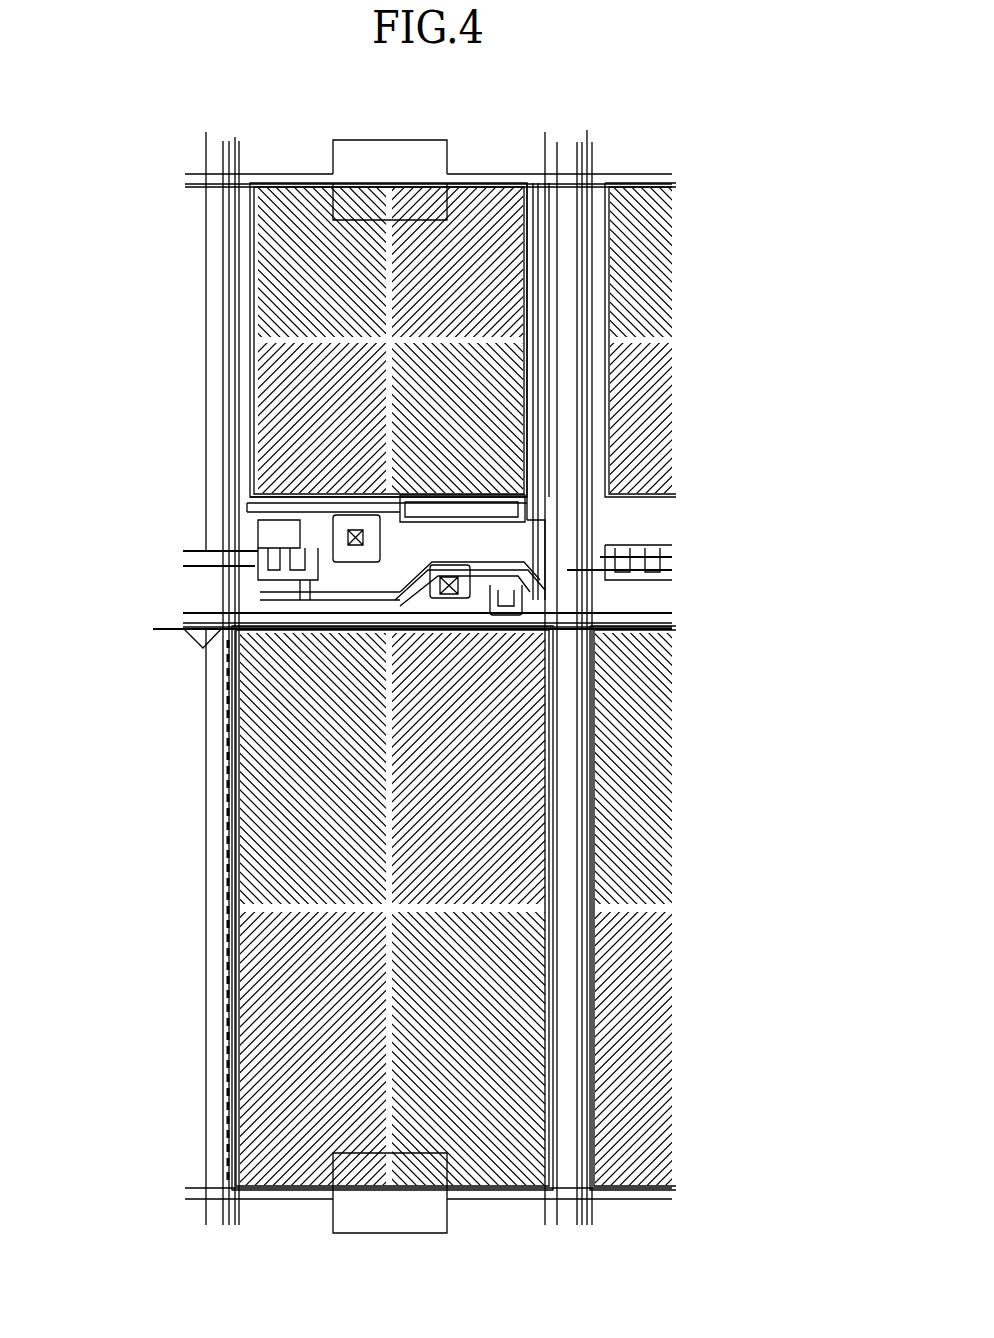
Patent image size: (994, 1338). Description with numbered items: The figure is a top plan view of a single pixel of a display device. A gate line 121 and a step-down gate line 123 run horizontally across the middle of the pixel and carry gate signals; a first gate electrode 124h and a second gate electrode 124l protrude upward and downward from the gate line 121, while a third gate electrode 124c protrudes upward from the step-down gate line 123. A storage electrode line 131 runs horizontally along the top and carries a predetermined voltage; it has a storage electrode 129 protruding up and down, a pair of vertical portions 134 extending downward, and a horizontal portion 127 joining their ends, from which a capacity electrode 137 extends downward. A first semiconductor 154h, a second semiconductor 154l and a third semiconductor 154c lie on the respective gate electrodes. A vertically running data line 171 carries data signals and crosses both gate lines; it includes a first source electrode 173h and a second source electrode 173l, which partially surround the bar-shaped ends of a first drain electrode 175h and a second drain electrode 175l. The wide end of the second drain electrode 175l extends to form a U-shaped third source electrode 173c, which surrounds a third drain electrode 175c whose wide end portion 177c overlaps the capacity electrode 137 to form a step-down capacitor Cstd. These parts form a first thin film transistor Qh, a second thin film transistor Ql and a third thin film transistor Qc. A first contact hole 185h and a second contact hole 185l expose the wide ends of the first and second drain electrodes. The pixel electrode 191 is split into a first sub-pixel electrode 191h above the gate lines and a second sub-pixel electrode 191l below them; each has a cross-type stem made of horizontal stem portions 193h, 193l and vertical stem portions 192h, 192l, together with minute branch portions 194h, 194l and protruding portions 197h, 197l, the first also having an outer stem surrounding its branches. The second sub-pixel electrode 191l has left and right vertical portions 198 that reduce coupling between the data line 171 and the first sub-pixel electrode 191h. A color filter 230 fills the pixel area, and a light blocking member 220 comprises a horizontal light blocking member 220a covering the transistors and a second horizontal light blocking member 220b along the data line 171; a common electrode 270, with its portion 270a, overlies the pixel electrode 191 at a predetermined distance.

The gate line 121 is at (600, 555).
The step-down gate line 123 is at (610, 645).
The first gate electrode 124h is at (300, 618).
The second gate electrode 124l is at (320, 500).
The third gate electrode 124c is at (610, 620).
The horizontal portion 127 is at (250, 500).
The storage electrode 129 is at (430, 140).
The storage electrode line 131 is at (492, 186).
The vertical portions 134 is at (545, 300).
The capacity electrode 137 is at (560, 545).
The first semiconductor 154h is at (280, 562).
The second semiconductor 154l is at (362, 610).
The third semiconductor 154c is at (520, 640).
The data line 171 is at (240, 209).
The first source electrode 173h is at (300, 590).
The second source electrode 173l is at (305, 538).
The third source electrode 173c is at (600, 590).
The first drain electrode 175h is at (300, 528).
The second drain electrode 175l is at (355, 600).
The third drain electrode 175c is at (560, 650).
The wide end portion 177c is at (540, 468).
The first contact hole 185h is at (372, 618).
The second contact hole 185l is at (510, 645).
The pixel electrode 191 is at (726, 1128).
The first sub-pixel electrode 191h is at (580, 318).
The second sub-pixel electrode 191l is at (112, 1090).
The vertical stem portion 192h is at (389, 226).
The vertical stem portion 192l is at (400, 858).
The horizontal stem portion 193h is at (290, 335).
The horizontal stem portion 193l is at (250, 907).
The minute branch portions 194h is at (290, 272).
The minute branch portions 194l is at (262, 832).
The protruding portion 197h is at (377, 630).
The protruding portion 197l is at (500, 650).
The vertical portions 198 is at (560, 490).
The light blocking member 220 is at (726, 1042).
The horizontal light blocking member 220a is at (378, 500).
The horizontal light blocking member 220b is at (560, 392).
The color filter 230 is at (220, 250).
The common electrode 270 is at (640, 633).
The common electrode portion 270a is at (590, 530).
The first thin film transistor Qh is at (248, 542).
The second thin film transistor Ql is at (296, 500).
The third thin film transistor Qc is at (530, 640).
The step-down capacitor Cstd is at (470, 500).